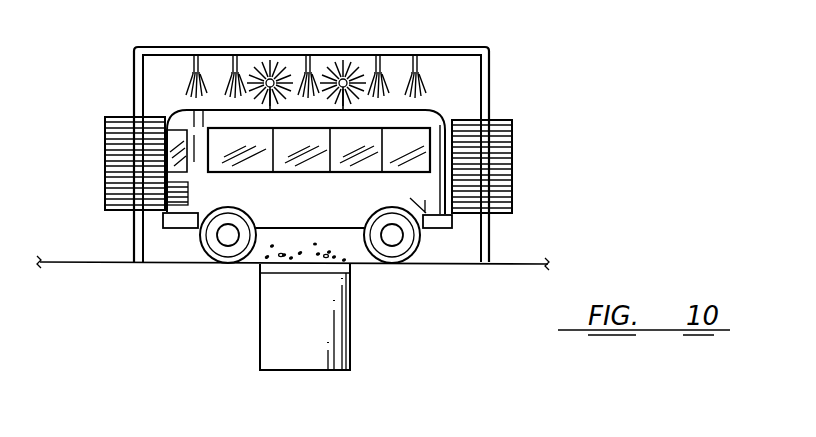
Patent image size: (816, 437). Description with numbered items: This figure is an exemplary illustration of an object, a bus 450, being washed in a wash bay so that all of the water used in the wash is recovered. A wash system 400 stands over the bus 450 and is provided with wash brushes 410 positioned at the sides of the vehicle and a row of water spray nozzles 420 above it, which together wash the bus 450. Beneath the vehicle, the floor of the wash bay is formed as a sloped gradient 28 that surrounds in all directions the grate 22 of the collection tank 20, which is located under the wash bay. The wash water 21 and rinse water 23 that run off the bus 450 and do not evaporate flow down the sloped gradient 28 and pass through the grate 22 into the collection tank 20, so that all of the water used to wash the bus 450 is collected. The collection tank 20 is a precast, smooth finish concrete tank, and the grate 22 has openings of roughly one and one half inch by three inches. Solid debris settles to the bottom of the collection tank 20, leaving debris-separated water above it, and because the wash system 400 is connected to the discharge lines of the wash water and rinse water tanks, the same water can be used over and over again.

The wash system 400 is at (400, 47).
The water spray nozzles 420 is at (204, 63).
The wash brushes 410 is at (512, 126).
The bus 450 is at (453, 224).
The sloped gradient 28 is at (172, 265).
The collection tank 20 is at (352, 320).
The wash water 21 is at (327, 258).
The grate 22 is at (270, 272).
The rinse water 23 is at (280, 258).